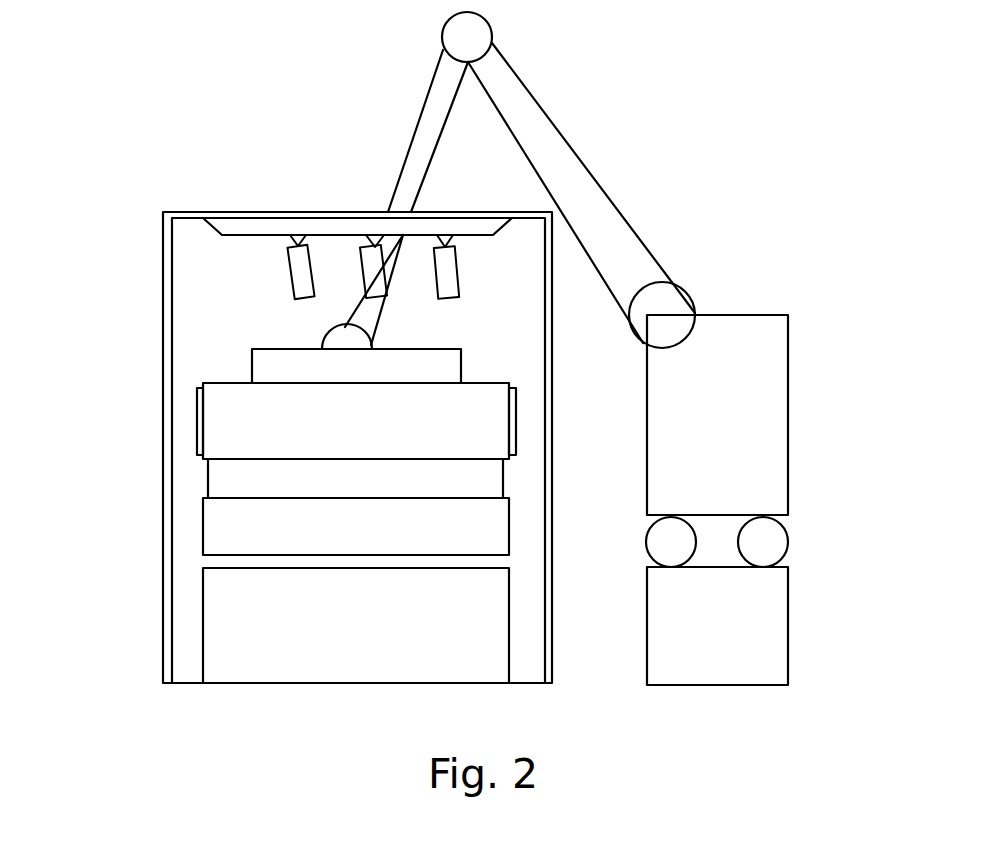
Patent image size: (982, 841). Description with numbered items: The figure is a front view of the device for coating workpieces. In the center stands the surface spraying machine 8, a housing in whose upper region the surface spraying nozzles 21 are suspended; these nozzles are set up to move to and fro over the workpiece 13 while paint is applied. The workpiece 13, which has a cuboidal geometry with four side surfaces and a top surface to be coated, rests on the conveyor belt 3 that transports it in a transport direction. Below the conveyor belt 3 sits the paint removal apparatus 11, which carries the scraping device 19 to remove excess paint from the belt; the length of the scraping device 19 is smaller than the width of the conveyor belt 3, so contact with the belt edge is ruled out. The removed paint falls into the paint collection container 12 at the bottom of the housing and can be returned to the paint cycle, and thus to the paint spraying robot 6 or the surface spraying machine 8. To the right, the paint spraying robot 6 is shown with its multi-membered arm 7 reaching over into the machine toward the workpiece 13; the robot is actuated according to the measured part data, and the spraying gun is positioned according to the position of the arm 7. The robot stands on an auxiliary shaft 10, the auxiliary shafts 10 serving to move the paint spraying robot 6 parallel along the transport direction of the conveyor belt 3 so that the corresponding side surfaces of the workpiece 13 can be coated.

The conveyor belt 3 is at (213, 422).
The paint spraying robot 6 is at (726, 430).
The multi-membered arm 7 is at (537, 119).
The surface spraying machine 8 is at (165, 303).
The auxiliary shaft 10 is at (773, 548).
The paint removal apparatus 11 is at (213, 526).
The paint collection container 12 is at (215, 625).
The workpiece 13 is at (258, 365).
The scraping device 19 is at (222, 478).
The surface spraying nozzles 21 is at (297, 260).